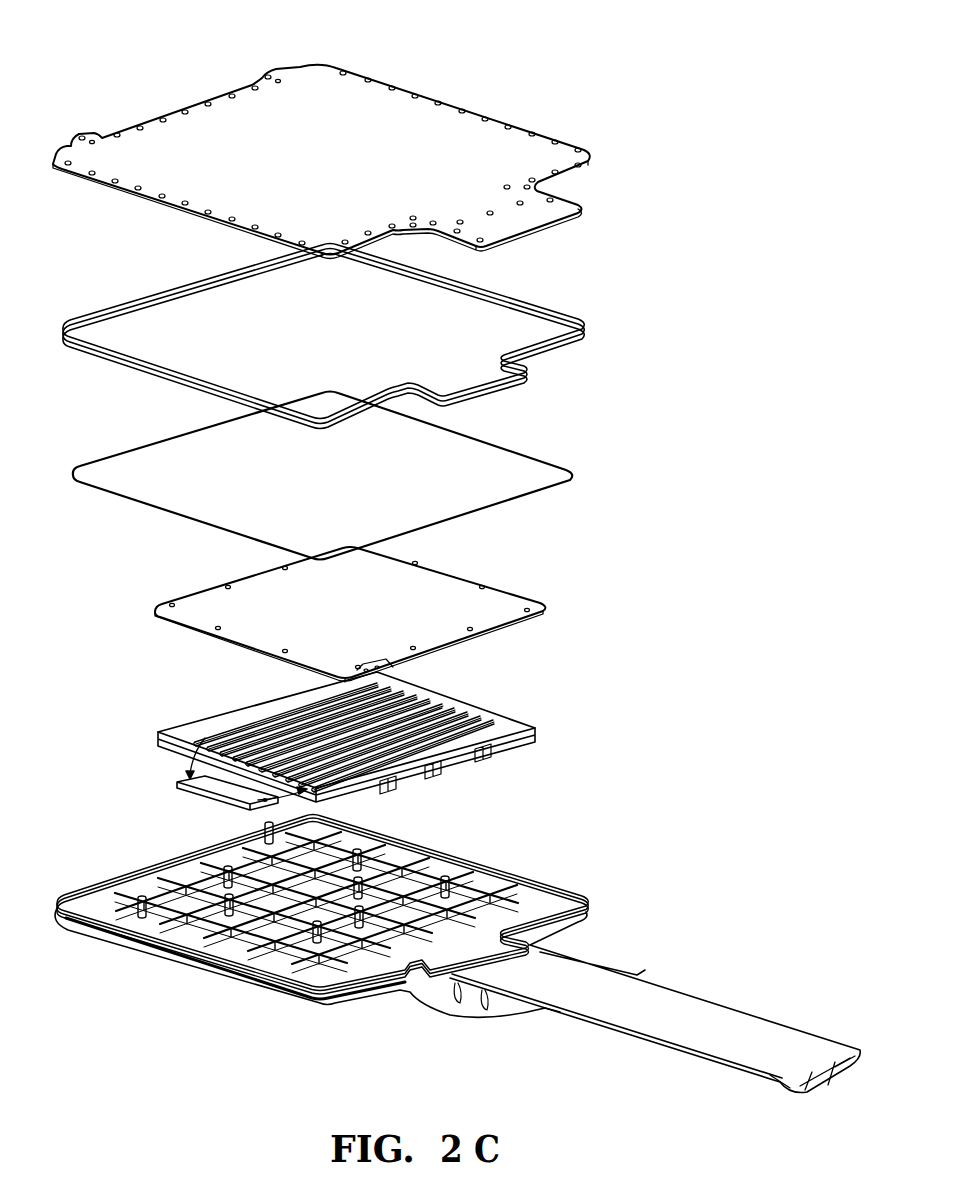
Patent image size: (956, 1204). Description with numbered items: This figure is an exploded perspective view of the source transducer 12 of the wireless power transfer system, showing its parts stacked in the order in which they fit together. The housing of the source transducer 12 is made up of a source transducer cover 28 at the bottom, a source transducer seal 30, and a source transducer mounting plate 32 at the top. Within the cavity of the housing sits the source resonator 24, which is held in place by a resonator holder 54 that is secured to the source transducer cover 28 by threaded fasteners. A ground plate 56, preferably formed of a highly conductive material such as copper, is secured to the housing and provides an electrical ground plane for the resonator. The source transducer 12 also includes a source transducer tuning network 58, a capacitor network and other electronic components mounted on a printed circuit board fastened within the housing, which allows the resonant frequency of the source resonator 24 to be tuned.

The source transducer 12 is at (515, 45).
The source transducer mounting plate 32 is at (560, 148).
The source transducer seal 30 is at (580, 328).
The ground plate 56 is at (548, 472).
The resonator holder 54 is at (515, 600).
The source resonator 24 is at (525, 727).
The source transducer tuning network 58 is at (190, 780).
The source transducer cover 28 is at (560, 896).